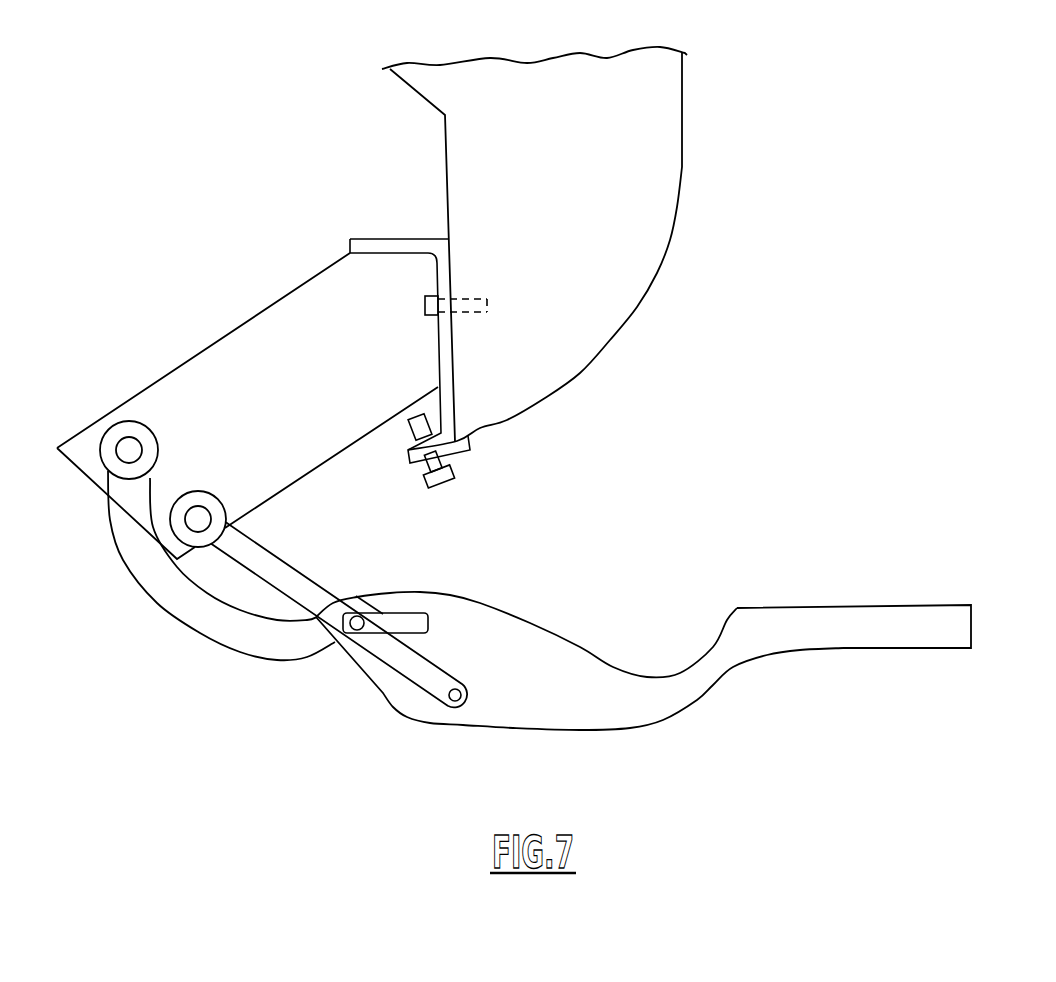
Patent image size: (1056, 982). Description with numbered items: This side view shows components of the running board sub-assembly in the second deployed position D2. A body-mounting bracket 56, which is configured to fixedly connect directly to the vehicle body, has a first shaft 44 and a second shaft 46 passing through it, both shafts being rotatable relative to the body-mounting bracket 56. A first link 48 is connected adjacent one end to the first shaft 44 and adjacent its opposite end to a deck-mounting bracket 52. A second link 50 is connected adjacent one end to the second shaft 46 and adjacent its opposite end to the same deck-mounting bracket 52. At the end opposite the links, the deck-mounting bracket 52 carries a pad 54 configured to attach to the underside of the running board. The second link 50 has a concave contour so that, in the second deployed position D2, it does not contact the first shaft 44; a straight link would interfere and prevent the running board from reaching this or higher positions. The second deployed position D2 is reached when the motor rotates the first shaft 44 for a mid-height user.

The first shaft 44 is at (203, 513).
The second shaft 46 is at (126, 440).
The first link 48 is at (308, 590).
The second link 50 is at (227, 628).
The deck-mounting bracket 52 is at (568, 717).
The pad 54 is at (852, 607).
The body-mounting bracket 56 is at (243, 363).
The second deployed position D2 is at (988, 640).